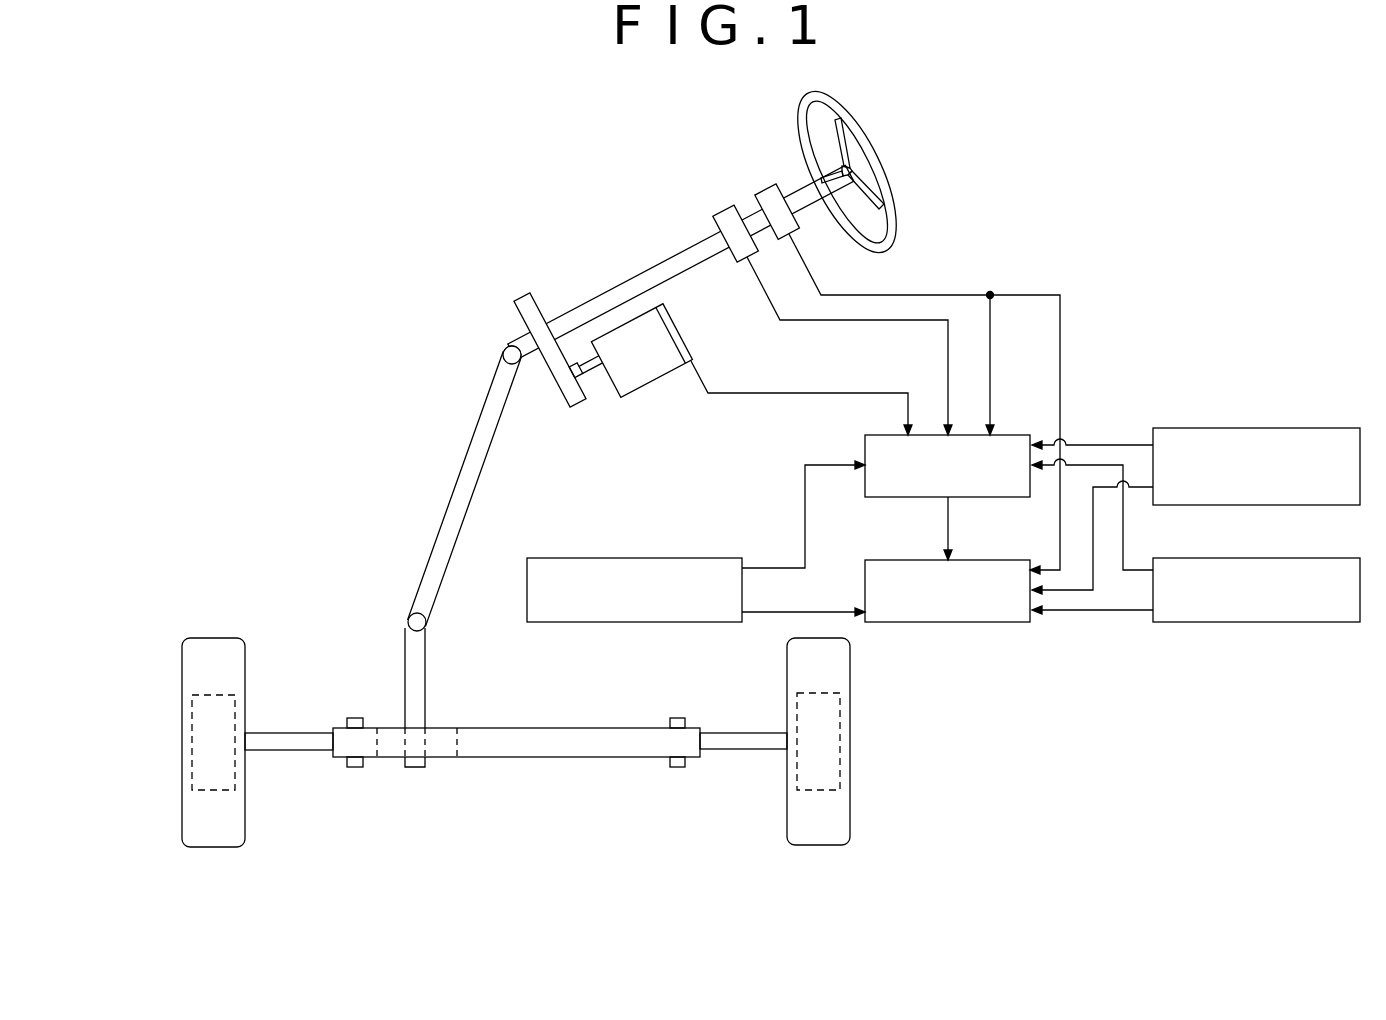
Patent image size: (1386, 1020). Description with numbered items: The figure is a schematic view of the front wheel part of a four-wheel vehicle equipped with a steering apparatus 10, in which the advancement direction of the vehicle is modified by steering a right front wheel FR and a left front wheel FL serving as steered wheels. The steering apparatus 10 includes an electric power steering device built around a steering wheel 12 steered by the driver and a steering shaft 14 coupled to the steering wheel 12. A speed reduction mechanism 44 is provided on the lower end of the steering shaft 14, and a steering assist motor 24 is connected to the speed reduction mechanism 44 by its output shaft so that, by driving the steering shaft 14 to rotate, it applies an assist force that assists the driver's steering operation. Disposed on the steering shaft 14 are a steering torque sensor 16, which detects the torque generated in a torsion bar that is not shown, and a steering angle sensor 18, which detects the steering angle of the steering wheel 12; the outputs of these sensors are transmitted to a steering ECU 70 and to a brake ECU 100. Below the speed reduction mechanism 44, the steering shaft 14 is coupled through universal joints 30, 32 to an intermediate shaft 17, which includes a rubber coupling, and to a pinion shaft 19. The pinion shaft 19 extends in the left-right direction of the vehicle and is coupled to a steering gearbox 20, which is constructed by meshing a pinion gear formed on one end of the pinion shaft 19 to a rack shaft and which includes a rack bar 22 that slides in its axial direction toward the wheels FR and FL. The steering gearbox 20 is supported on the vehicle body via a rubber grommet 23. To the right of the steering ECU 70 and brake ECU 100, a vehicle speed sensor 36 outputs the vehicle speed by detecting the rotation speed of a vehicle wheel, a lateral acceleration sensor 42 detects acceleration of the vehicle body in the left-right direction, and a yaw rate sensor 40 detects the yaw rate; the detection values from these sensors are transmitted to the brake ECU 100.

The steering apparatus 10 is at (277, 155).
The steering wheel 12 is at (877, 158).
The steering shaft 14 is at (637, 283).
The steering torque sensor 16 is at (725, 217).
The steering angle sensor 18 is at (762, 187).
The speed reduction mechanism 44 is at (527, 297).
The steering assist motor 24 is at (657, 387).
The universal joint 30 is at (503, 350).
The intermediate shaft 17 is at (458, 480).
The universal joint 32 is at (407, 623).
The pinion shaft 19 is at (413, 675).
The steering gearbox 20 is at (518, 748).
The rubber grommet 23 is at (355, 767).
The rack bar 22 is at (285, 750).
The right front wheel FR is at (182, 658).
The left front wheel FL is at (852, 657).
The steering ECU 70 is at (1010, 433).
The brake ECU 100 is at (988, 558).
The lateral acceleration sensor 42 is at (1258, 427).
The yaw rate sensor 40 is at (1257, 557).
The vehicle speed sensor 36 is at (635, 558).